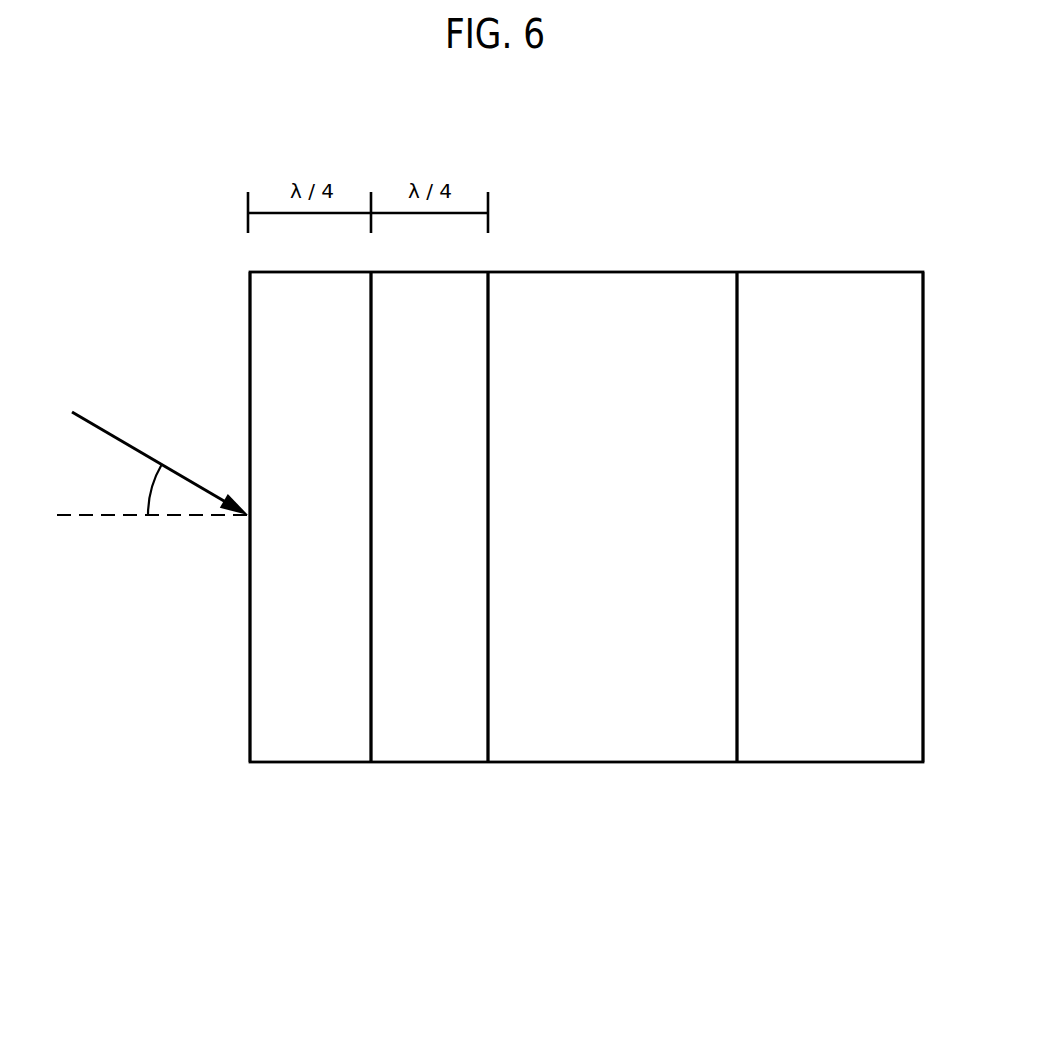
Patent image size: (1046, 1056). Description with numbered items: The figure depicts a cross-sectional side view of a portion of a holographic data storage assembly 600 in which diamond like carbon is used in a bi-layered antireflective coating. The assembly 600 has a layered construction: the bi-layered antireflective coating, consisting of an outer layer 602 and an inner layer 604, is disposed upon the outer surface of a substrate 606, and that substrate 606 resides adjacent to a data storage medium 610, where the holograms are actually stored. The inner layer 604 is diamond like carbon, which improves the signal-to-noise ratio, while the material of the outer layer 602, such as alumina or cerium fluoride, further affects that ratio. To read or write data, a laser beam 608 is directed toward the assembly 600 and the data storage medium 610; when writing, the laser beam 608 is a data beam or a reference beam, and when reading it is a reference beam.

The holographic data storage assembly 600 is at (624, 232).
The outer layer 602 is at (280, 748).
The inner layer 604 is at (435, 748).
The substrate 606 is at (635, 748).
The laser beam 608 is at (95, 422).
The data storage medium 610 is at (846, 490).